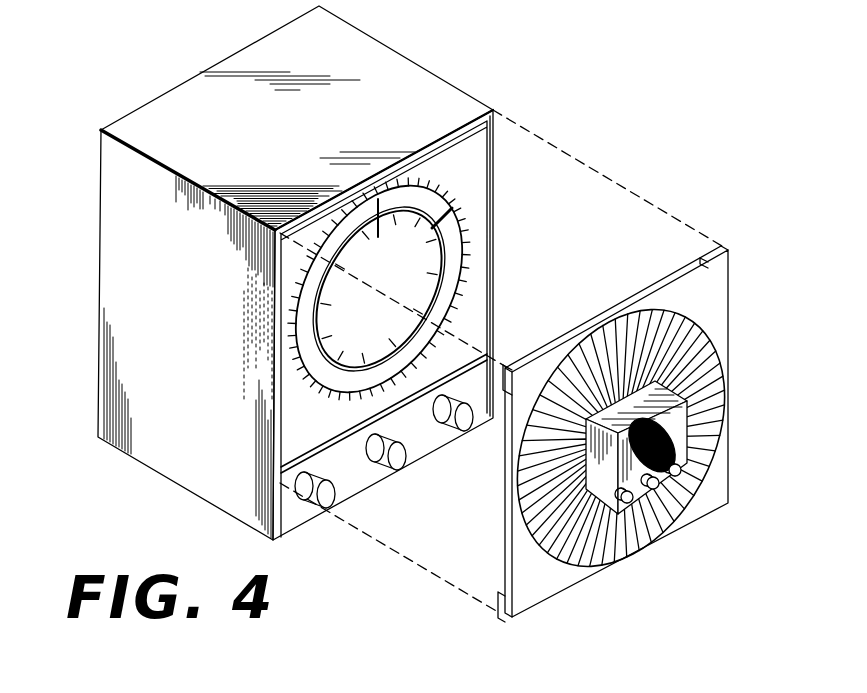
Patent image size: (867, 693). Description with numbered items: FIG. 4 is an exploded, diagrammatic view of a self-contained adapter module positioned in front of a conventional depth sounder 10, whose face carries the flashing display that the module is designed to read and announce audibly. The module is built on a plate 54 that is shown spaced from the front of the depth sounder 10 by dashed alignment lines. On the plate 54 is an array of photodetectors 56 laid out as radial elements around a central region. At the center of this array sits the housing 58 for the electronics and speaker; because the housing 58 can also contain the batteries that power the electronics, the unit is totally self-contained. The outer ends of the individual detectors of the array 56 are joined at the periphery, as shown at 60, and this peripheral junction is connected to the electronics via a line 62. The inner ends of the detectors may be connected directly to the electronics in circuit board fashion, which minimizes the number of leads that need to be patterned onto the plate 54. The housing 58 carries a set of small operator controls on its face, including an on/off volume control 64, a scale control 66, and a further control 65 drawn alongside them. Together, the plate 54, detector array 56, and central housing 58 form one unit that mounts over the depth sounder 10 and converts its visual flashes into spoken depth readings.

The depth sounder 10 is at (459, 80).
The plate 54 is at (717, 459).
The array of photodetectors 56 is at (703, 328).
The housing 58 is at (679, 428).
The periphery joining the detector outer ends 60 is at (592, 568).
The line 62 is at (563, 535).
The on/off volume control 64 is at (633, 499).
The control knob 65 is at (681, 472).
The scale control 66 is at (659, 485).